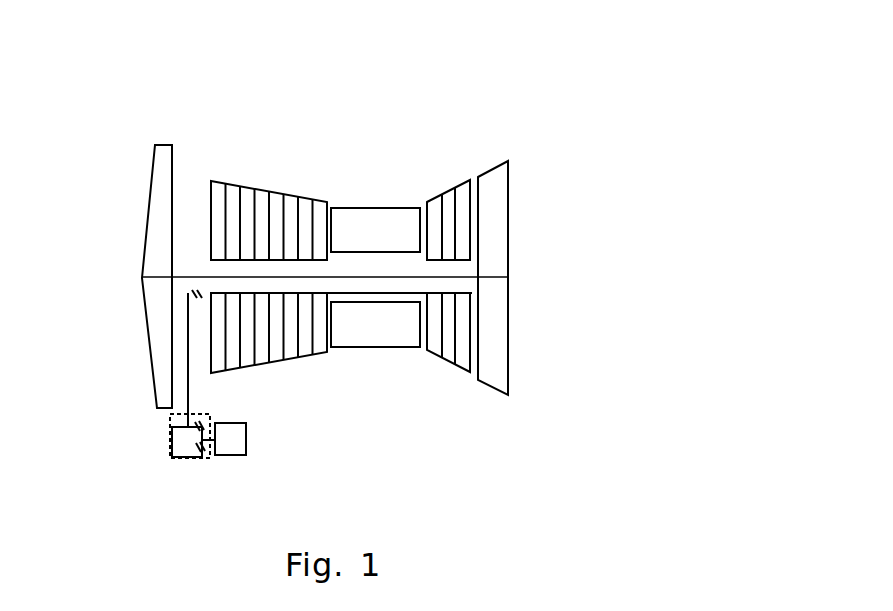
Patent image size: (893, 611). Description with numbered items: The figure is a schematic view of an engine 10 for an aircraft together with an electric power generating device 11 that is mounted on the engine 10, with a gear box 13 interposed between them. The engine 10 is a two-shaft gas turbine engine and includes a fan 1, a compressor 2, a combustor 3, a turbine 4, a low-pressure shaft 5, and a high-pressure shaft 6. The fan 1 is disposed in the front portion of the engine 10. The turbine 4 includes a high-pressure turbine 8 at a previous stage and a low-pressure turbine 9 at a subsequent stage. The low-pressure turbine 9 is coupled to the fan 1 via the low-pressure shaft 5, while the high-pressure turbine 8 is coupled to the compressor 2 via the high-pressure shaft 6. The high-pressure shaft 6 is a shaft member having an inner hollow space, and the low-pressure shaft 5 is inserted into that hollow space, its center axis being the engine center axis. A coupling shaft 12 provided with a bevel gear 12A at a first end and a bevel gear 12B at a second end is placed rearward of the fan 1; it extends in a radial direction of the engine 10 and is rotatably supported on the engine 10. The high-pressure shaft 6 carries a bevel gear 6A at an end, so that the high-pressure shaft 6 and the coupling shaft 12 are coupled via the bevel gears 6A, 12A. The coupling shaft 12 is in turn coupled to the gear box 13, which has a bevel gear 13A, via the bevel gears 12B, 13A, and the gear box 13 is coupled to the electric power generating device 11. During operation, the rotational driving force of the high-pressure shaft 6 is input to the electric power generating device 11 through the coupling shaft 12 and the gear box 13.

The engine 10 is at (452, 93).
The fan 1 is at (157, 145).
The compressor 2 is at (247, 185).
The combustor 3 is at (345, 347).
The turbine 4 is at (493, 436).
The low-pressure shaft 5 is at (387, 278).
The high-pressure shaft 6 is at (360, 303).
The bevel gear 6A is at (212, 264).
The high-pressure turbine 8 is at (448, 368).
The low-pressure turbine 9 is at (497, 385).
The electric power generating device 11 is at (244, 458).
The coupling shaft 12 is at (188, 340).
The bevel gear 12A is at (187, 293).
The bevel gear 12B is at (186, 428).
The gear box 13 is at (182, 457).
The bevel gear 13A is at (200, 452).